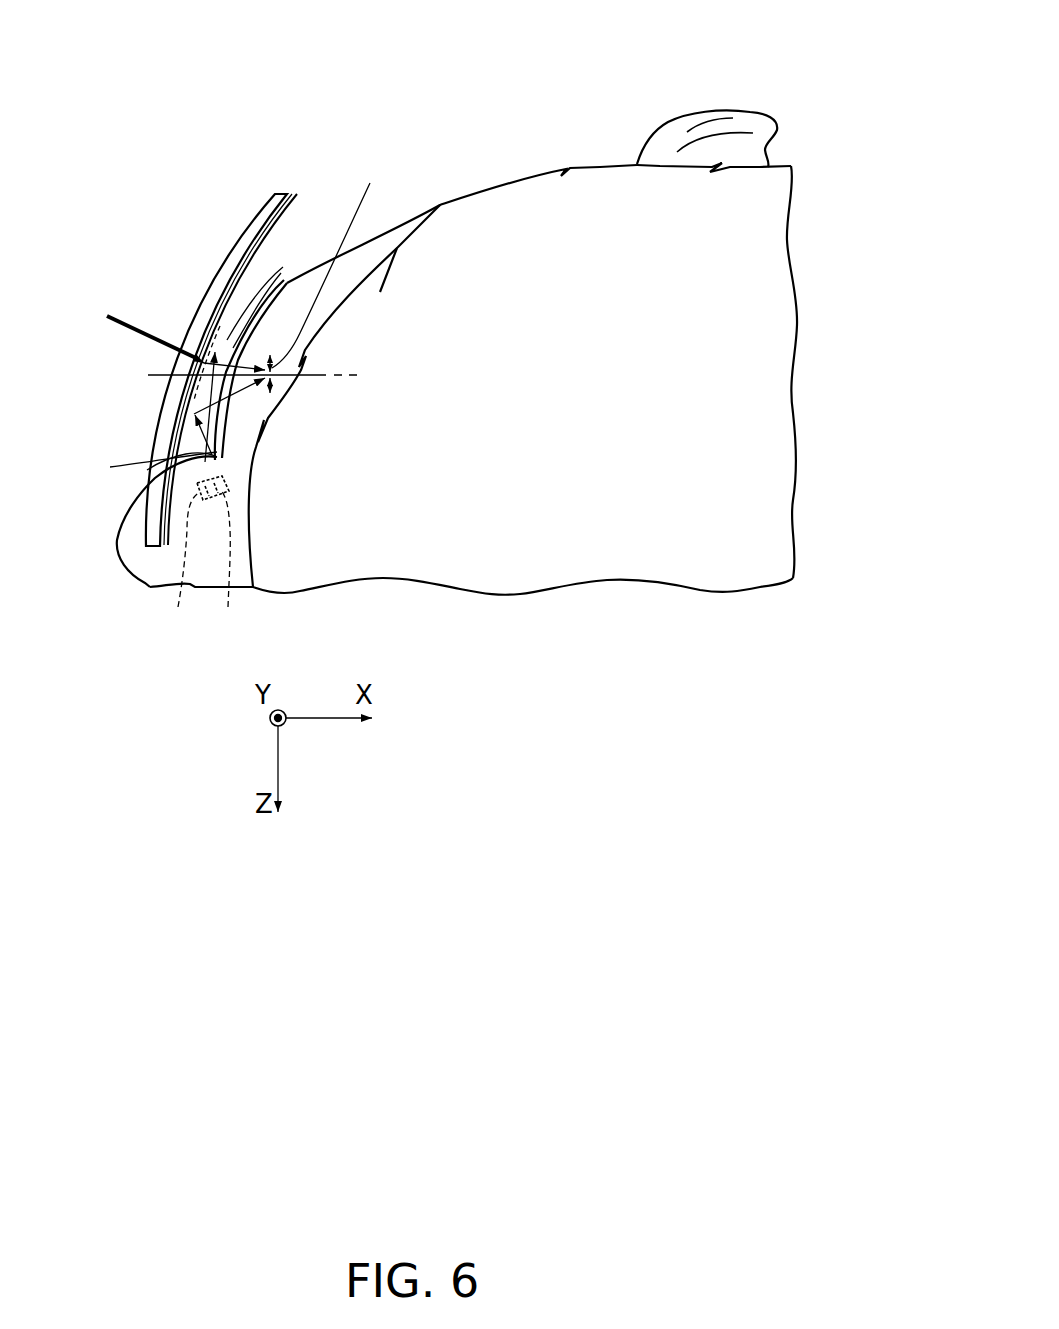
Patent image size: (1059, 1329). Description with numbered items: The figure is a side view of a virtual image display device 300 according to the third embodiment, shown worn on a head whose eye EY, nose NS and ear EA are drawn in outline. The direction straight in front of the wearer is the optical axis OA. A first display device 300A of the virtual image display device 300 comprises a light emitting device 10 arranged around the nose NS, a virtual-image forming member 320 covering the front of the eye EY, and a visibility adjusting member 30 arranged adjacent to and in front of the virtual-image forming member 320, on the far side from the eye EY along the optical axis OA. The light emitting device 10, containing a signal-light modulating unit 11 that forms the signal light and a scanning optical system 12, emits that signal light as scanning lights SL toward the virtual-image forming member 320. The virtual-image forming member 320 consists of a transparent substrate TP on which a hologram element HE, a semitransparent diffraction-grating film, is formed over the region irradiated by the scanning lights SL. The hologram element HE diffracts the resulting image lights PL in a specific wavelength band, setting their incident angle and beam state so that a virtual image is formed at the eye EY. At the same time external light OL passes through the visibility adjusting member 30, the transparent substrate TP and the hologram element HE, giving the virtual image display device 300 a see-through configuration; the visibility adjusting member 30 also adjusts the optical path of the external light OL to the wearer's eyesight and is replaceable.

The virtual image display device 300 is at (269, 92).
The first display device 300A is at (223, 167).
The visibility adjusting member 30 is at (185, 358).
The virtual-image forming member 320 is at (217, 310).
The transparent substrate TP is at (212, 337).
The external light OL is at (127, 331).
The optical axis OA is at (157, 377).
The hologram element HE is at (192, 442).
The scanning lights SL is at (146, 468).
The nose NS is at (148, 557).
The light emitting device 10 is at (213, 515).
The signal-light modulating unit 11 is at (182, 564).
The scanning optical system 12 is at (233, 563).
The eye EY is at (302, 308).
The image lights PL is at (263, 295).
The ear EA is at (730, 140).